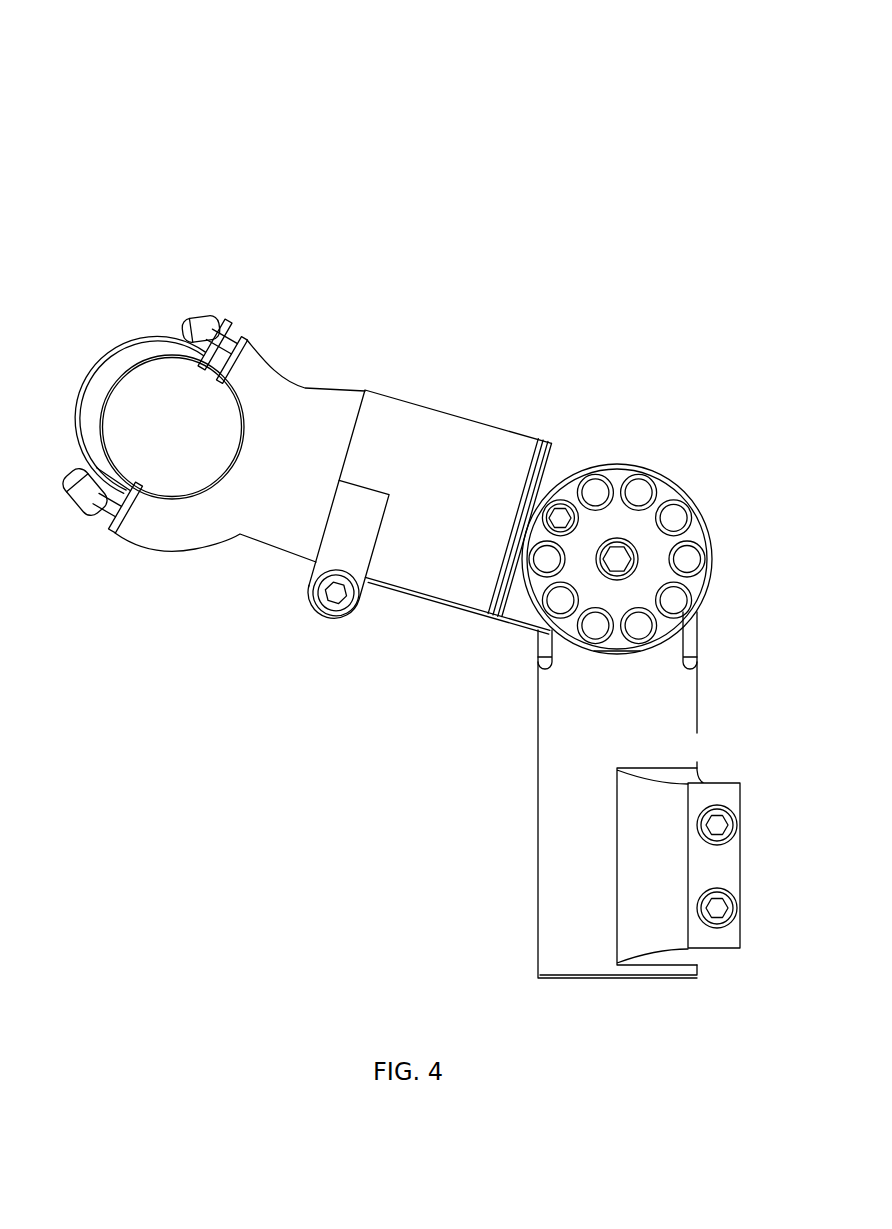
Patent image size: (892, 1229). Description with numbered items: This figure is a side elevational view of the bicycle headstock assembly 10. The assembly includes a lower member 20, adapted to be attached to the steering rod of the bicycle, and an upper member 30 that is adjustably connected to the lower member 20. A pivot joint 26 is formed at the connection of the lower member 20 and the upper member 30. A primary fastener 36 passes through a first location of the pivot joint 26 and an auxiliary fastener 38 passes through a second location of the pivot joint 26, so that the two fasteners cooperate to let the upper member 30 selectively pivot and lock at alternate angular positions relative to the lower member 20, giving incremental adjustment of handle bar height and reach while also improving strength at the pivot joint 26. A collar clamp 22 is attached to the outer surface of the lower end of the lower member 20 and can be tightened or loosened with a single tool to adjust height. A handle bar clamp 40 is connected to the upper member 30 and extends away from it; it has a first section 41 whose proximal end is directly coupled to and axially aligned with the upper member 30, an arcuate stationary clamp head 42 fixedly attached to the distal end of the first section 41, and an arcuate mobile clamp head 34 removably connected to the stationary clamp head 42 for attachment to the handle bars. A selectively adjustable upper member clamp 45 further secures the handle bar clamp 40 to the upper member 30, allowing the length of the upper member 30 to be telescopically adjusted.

The bicycle headstock assembly 10 is at (396, 145).
The lower member 20 is at (500, 850).
The collar clamp 22 is at (732, 872).
The pivot joint 26 is at (715, 533).
The upper member 30 is at (444, 380).
The mobile clamp head 34 is at (112, 375).
The primary fastener 36 is at (620, 548).
The auxiliary fastener 38 is at (565, 513).
The handle bar clamp 40 is at (138, 347).
The first section 41 is at (275, 523).
The stationary clamp head 42 is at (150, 537).
The upper member clamp 45 is at (345, 552).